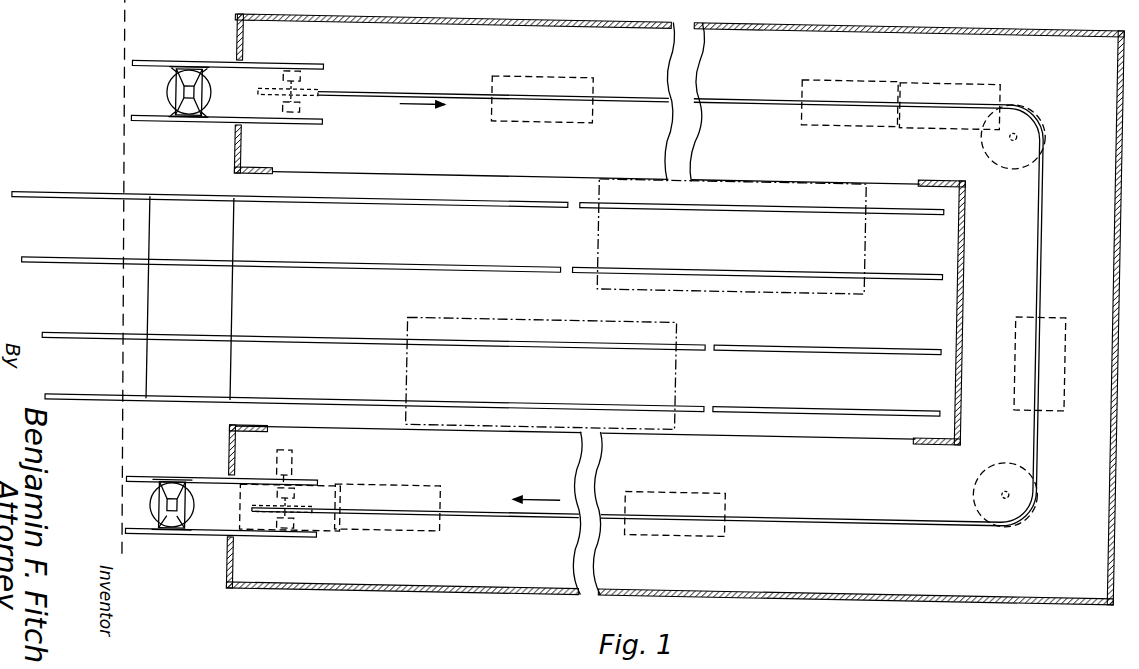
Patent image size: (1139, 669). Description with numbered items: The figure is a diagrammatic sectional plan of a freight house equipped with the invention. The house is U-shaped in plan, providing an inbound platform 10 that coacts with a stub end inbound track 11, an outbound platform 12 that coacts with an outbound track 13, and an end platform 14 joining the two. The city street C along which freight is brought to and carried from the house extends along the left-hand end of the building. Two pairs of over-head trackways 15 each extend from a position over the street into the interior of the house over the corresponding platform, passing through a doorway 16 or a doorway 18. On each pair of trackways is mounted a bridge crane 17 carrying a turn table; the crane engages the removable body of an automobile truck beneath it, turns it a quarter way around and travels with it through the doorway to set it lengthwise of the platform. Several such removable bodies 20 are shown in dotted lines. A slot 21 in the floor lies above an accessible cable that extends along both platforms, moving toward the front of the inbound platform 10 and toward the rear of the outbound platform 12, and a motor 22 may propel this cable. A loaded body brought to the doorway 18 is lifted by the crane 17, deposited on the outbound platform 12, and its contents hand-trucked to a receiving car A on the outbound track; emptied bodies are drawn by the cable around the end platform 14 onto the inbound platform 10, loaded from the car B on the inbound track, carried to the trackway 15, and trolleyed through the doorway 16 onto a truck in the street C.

The inbound platform 10 is at (854, 518).
The inbound track 11 is at (491, 374).
The outbound platform 12 is at (907, 106).
The outbound track 13 is at (477, 236).
The end platform 14 is at (649, 308).
The over-head trackways 15 is at (214, 69).
The doorway 16 is at (246, 476).
The bridge crane 17 is at (163, 100).
The doorway 18 is at (240, 132).
The removable bodies 20 is at (590, 79).
The slot 21 is at (764, 97).
The motor 22 is at (300, 465).
The receiving car A is at (863, 236).
The car B is at (677, 377).
The city street C is at (183, 168).